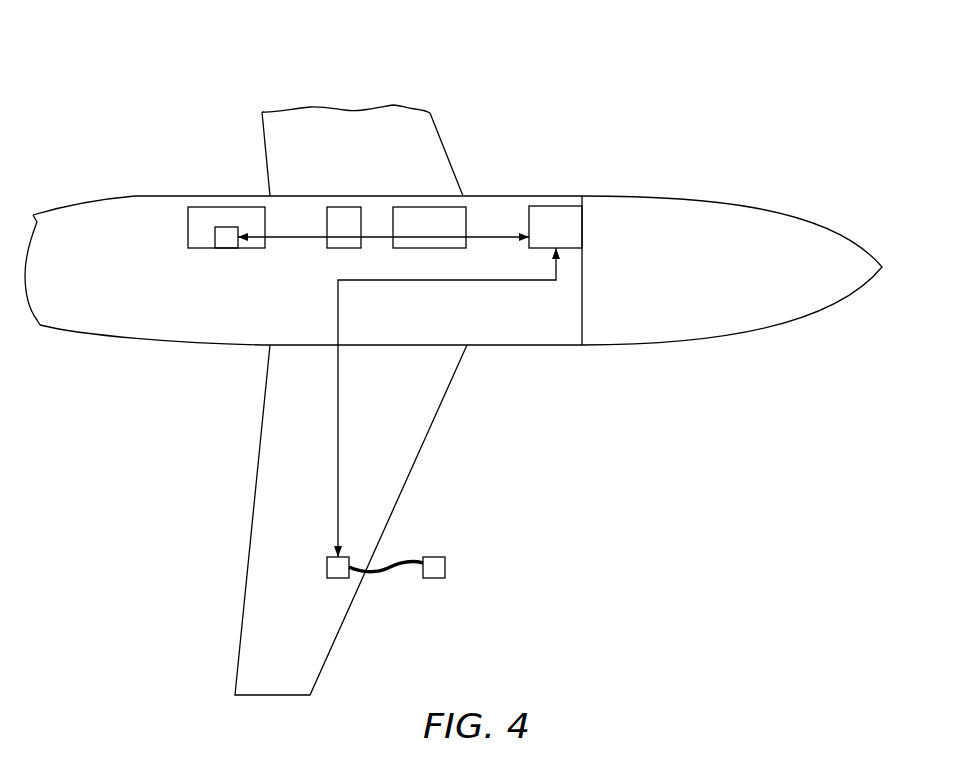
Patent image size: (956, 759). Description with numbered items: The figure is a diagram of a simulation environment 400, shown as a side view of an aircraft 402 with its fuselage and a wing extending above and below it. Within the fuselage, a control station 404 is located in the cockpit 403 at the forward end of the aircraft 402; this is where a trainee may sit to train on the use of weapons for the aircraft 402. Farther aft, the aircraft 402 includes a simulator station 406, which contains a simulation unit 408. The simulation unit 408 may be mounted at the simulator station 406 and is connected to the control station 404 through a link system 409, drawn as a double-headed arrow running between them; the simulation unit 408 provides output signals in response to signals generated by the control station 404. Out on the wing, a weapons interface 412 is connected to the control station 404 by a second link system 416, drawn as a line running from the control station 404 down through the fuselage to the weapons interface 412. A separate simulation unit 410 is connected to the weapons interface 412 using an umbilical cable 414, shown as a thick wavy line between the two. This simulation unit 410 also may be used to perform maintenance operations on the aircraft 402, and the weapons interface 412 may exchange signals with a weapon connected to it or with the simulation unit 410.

The simulation environment 400 is at (612, 72).
The aircraft 402 is at (122, 194).
The cockpit 403 is at (747, 285).
The control station 404 is at (577, 228).
The simulator station 406 is at (205, 249).
The simulation unit 408 is at (229, 249).
The link system 409 is at (296, 240).
The simulation unit 410 is at (434, 557).
The weapons interface 412 is at (327, 569).
The umbilical cable 414 is at (389, 570).
The link system 416 is at (447, 282).